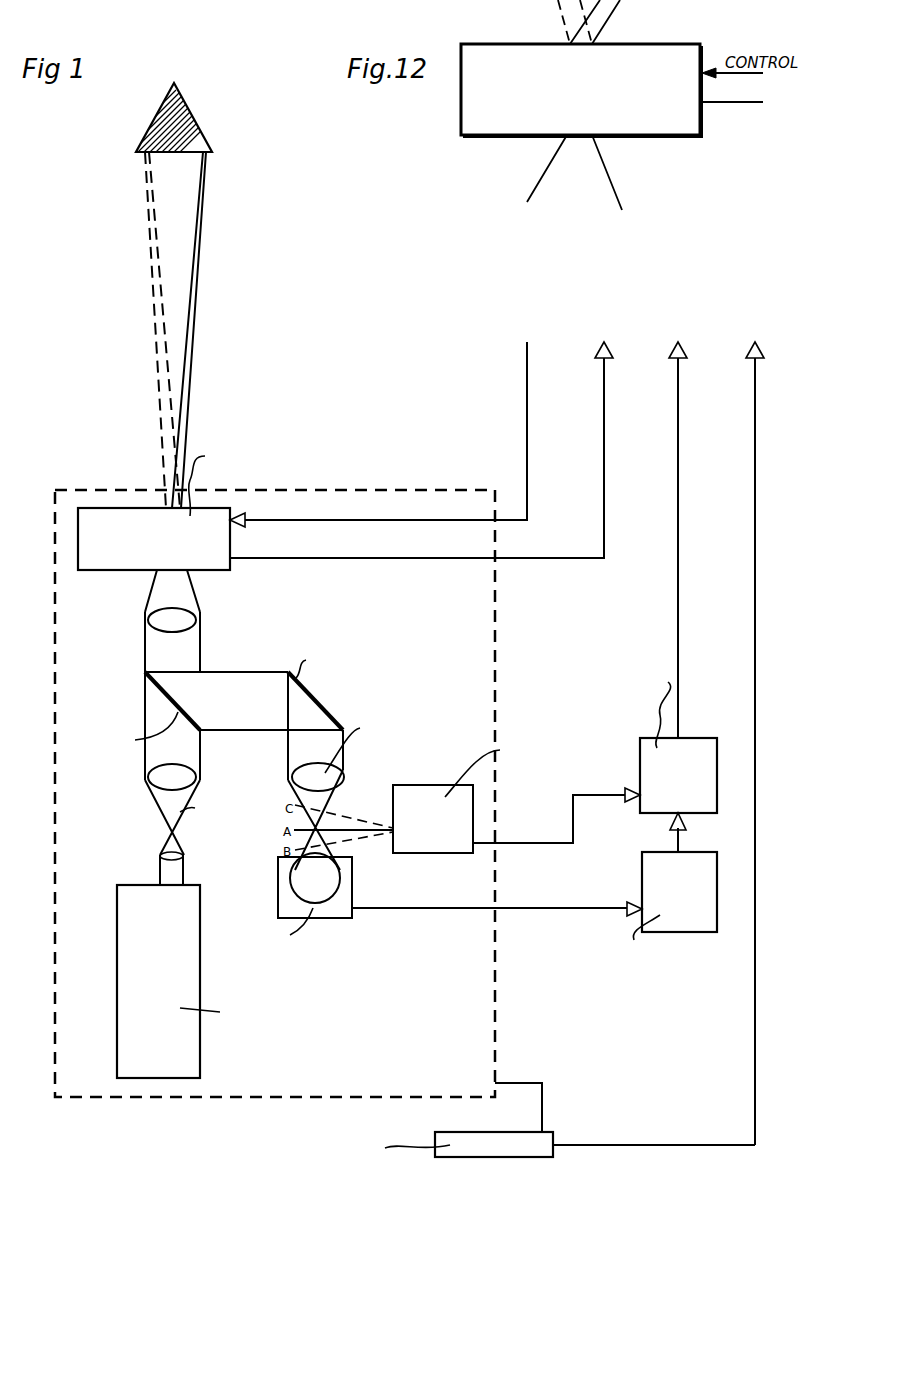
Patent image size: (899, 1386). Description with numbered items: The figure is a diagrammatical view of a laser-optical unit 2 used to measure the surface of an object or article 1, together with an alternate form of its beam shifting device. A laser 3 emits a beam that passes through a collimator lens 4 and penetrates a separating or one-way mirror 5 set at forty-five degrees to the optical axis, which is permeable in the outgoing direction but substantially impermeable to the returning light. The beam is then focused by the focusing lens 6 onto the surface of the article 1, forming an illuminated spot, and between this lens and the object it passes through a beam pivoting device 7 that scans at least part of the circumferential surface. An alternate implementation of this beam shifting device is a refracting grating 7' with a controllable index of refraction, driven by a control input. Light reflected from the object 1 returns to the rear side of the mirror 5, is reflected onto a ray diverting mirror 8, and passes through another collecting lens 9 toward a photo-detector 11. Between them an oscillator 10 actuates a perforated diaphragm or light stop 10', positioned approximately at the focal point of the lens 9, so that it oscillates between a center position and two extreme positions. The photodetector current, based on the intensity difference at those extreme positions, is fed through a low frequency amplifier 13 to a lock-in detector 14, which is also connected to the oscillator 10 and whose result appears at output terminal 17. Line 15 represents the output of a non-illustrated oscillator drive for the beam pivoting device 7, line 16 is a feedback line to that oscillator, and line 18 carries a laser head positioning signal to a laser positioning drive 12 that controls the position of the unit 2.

In FIG. 1, the object or article 1 is at (200, 130).
In FIG. 1, the laser-optical unit 2 is at (270, 1098).
In FIG. 1, the laser 3 is at (128, 933).
In FIG. 1, the collimator lens 4 is at (160, 818).
In FIG. 1, the separating or one-way mirror 5 is at (165, 698).
In FIG. 1, the focusing lens 6 is at (148, 620).
In FIG. 1, the beam pivoting device 7 is at (161, 513).
In FIG. 12, the refracting grating with controllable index of refraction 7' is at (560, 106).
In FIG. 1, the ray diverting mirror 8 is at (305, 690).
In FIG. 1, the collecting lens 9 is at (325, 778).
In FIG. 1, the oscillator 10 is at (486, 800).
In FIG. 1, the perforated diaphragm or light stop 10' is at (344, 821).
In FIG. 1, the photo-detector 11 is at (348, 880).
In FIG. 1, the laser positioning drive 12 is at (483, 1148).
In FIG. 1, the low frequency amplifier 13 is at (698, 893).
In FIG. 1, the lock-in detector 14 is at (700, 770).
In FIG. 1, the line 15 is at (396, 399).
In FIG. 1, the feedback line 16 is at (431, 407).
In FIG. 1, the output terminal 17 is at (696, 495).
In FIG. 1, the line 18 is at (769, 708).